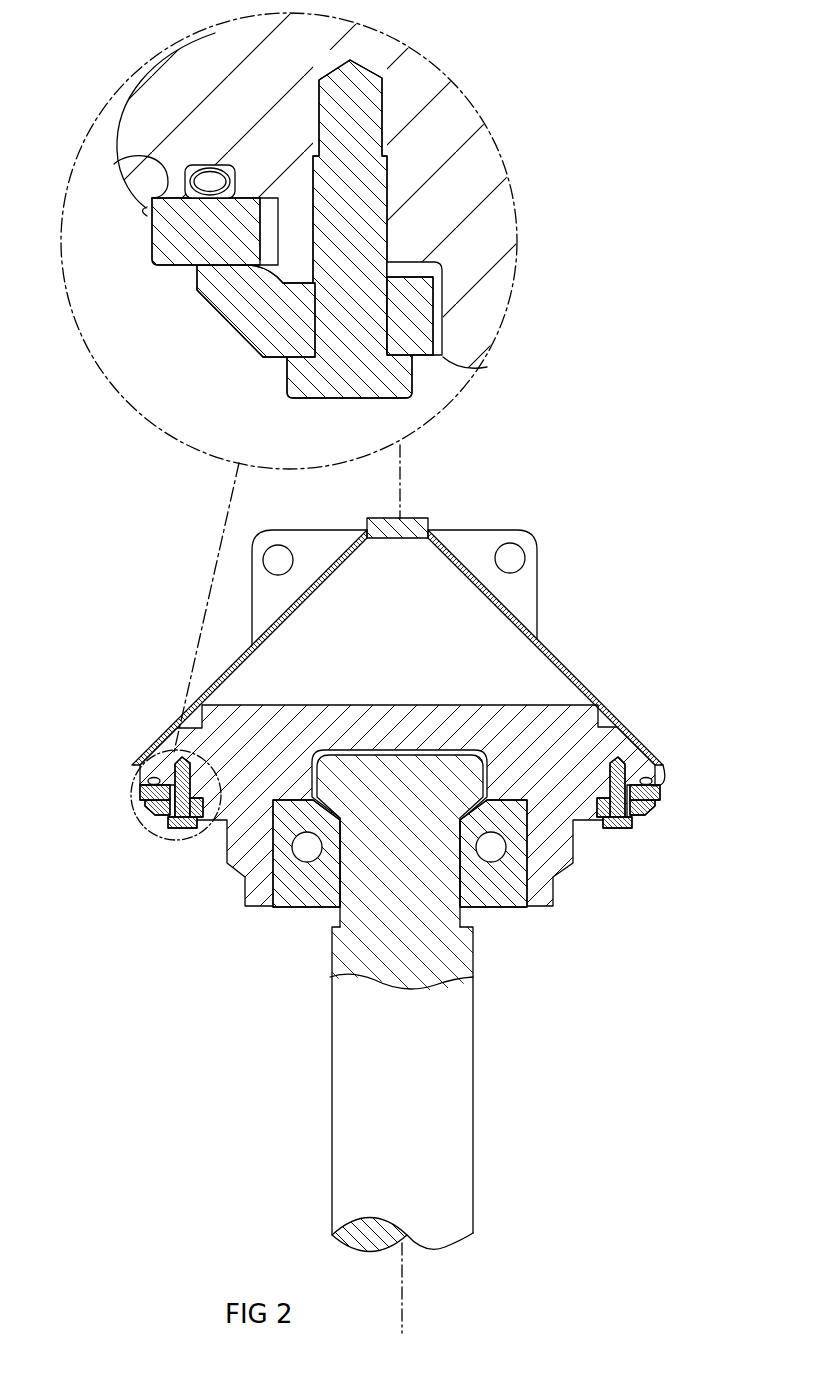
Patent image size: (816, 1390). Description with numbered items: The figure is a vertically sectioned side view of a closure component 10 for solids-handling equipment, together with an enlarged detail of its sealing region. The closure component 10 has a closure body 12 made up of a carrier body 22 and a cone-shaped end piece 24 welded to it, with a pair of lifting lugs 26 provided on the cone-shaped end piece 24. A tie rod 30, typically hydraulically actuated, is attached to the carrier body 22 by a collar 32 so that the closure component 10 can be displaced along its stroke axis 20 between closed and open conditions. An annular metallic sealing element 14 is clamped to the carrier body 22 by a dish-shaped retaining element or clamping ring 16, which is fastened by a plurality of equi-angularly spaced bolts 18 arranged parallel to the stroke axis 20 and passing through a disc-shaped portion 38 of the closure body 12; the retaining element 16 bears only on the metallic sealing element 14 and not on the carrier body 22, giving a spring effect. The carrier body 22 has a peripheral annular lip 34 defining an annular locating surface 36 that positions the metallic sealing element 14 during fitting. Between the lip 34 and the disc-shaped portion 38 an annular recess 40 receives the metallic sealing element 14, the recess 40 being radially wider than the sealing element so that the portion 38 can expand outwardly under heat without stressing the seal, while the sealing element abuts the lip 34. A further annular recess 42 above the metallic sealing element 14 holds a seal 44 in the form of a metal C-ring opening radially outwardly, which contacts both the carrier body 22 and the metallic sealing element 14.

The closure component 10 is at (650, 491).
The closure body 12 is at (603, 670).
The metallic sealing element 14 is at (170, 242).
The retaining element or clamping ring 16 is at (242, 301).
The bolts 18 is at (302, 378).
The stroke axis 20 is at (410, 1273).
The carrier body 22 is at (213, 60).
The cone-shaped end piece 24 is at (550, 647).
The lifting lugs 26 is at (290, 537).
The tie rod 30 is at (452, 1078).
The collar 32 is at (513, 905).
The peripheral annular lip 34 is at (142, 212).
The annular locating surface 36 is at (372, 471).
The disc-shaped portion 38 is at (297, 232).
The annular recess 40 is at (272, 210).
The further annular recess 42 is at (162, 200).
The seal 44 is at (185, 160).